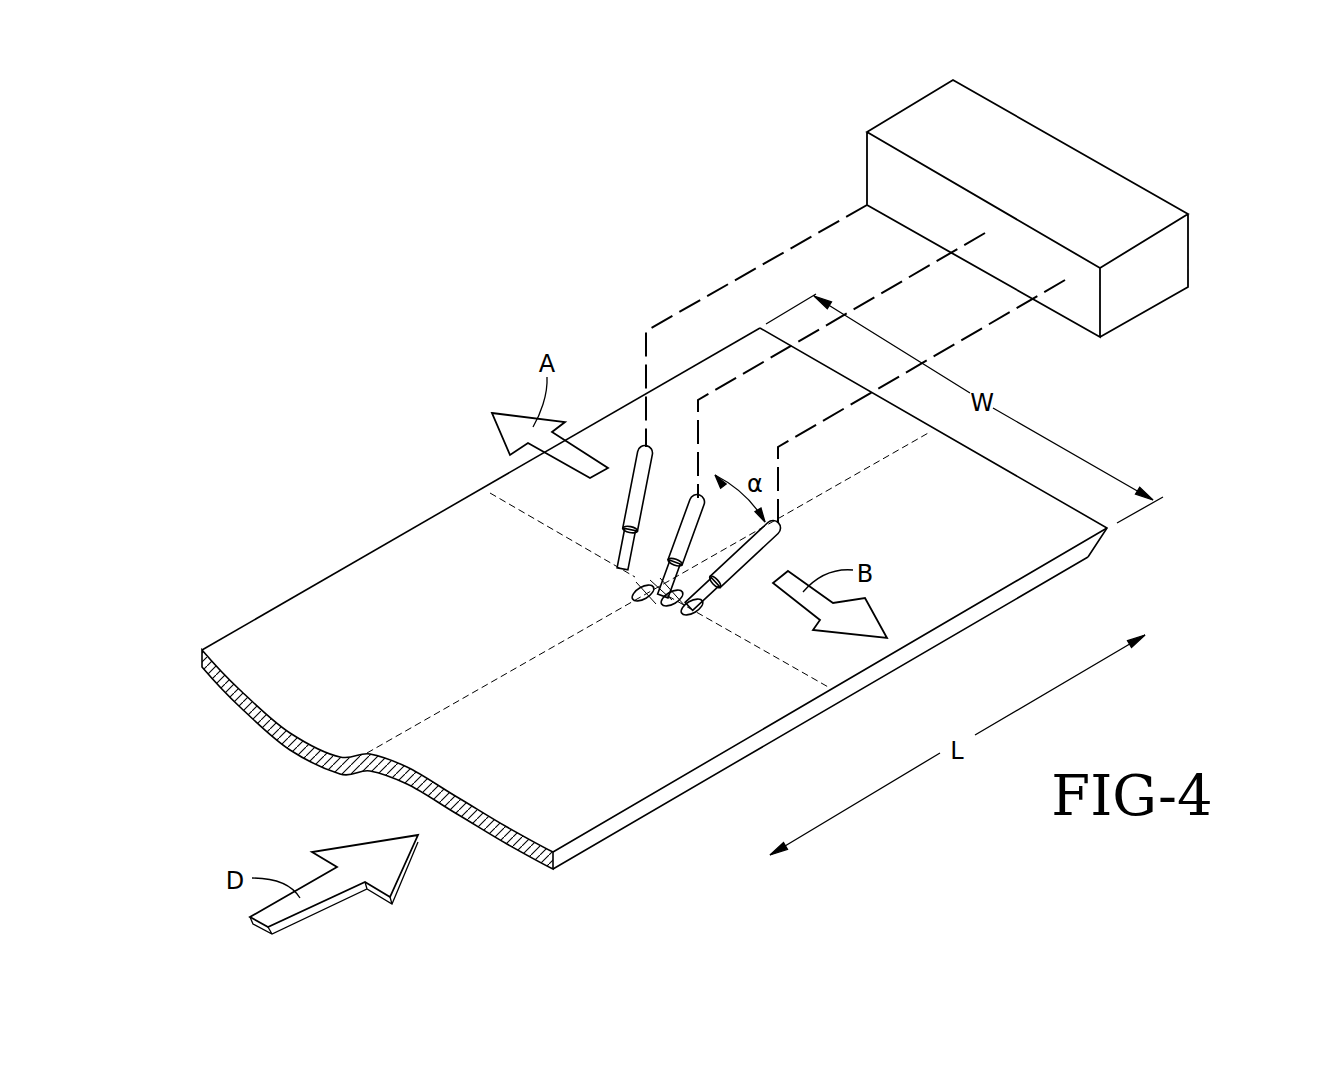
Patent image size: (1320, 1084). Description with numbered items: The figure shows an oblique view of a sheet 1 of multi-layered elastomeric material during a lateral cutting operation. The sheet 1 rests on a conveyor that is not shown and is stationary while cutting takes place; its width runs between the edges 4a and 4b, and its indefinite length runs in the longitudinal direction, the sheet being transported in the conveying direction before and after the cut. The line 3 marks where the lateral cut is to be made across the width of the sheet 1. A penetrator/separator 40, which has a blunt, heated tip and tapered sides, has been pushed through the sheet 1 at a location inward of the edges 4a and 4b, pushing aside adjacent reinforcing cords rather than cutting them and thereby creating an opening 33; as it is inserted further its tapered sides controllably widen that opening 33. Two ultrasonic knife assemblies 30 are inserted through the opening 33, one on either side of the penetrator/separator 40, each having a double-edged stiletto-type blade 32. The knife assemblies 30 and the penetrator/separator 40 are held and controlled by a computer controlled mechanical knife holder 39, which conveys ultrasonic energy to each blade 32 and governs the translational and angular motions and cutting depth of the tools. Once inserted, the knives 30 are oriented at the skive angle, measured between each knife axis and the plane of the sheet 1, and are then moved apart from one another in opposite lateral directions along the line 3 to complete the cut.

The sheet of elastomeric material 1 is at (352, 597).
The line of lateral cut 3 is at (773, 657).
The edge of the sheet 4a is at (603, 822).
The edge of the sheet 4b is at (240, 623).
The ultrasonic knife assembly 30 is at (638, 477).
The blade 32 is at (625, 550).
The opening 33 is at (673, 600).
The computer controlled mechanical knife holder 39 is at (1152, 285).
The penetrator/separator 40 is at (688, 513).